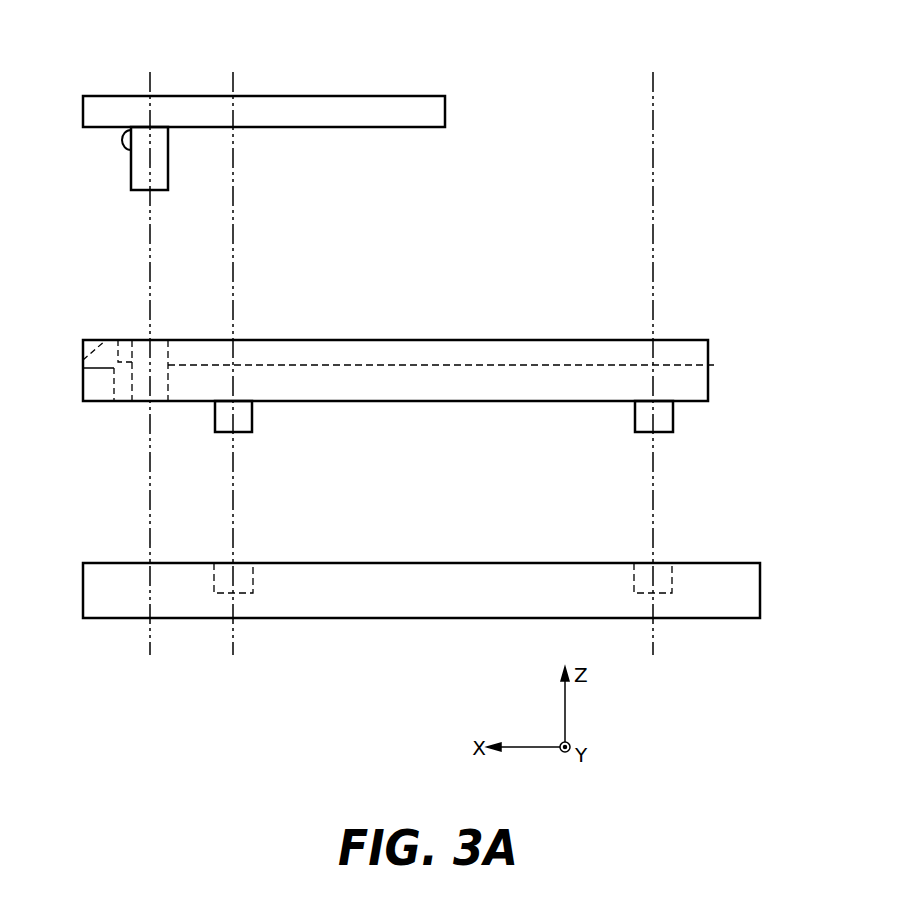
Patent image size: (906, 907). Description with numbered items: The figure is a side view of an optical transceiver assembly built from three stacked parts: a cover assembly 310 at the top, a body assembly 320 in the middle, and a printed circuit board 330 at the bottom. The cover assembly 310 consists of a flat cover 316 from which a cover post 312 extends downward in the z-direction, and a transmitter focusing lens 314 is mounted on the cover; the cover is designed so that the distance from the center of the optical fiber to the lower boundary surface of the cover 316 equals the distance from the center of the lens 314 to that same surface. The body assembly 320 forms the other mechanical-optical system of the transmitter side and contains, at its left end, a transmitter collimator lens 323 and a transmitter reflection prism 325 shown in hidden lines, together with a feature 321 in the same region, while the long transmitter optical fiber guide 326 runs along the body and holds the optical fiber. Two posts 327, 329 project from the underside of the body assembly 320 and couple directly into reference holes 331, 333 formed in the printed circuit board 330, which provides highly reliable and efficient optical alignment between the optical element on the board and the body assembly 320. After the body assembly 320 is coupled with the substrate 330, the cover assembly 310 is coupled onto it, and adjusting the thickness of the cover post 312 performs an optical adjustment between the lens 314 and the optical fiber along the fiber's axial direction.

The cover assembly 310 is at (318, 62).
The cover post 312 is at (168, 152).
The transmitter focusing lens 314 is at (123, 138).
The cover 316 is at (445, 110).
The body assembly 320 is at (318, 288).
The pin receiving hole 321 is at (157, 352).
The transmitter collimator lens 323 is at (100, 370).
The transmitter reflection prism 325 is at (97, 350).
The transmitter optical fiber guide 326 is at (527, 353).
The post 327 is at (252, 415).
The post 329 is at (673, 415).
The printed circuit board 330 is at (318, 528).
The reference hole 331 is at (253, 575).
The reference hole 333 is at (672, 575).